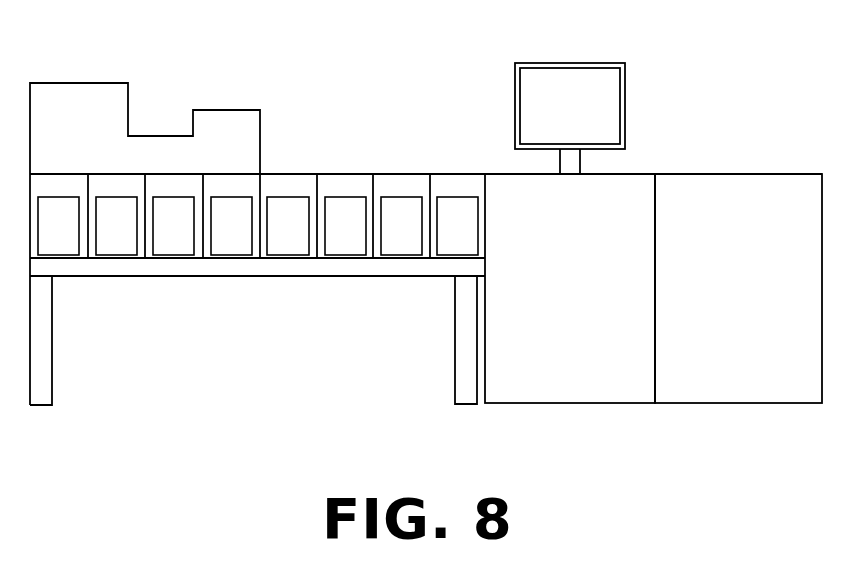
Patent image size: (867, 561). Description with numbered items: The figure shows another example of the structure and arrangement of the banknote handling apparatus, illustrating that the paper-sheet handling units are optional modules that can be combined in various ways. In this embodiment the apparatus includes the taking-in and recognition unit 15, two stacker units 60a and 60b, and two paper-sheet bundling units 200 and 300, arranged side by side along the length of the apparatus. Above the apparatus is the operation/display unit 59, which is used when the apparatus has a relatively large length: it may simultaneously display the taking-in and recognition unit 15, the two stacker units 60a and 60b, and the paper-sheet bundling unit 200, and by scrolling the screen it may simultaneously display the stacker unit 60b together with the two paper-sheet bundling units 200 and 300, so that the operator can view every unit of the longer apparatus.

The taking-in and recognition unit 15 is at (77, 82).
The operation/display unit 59 is at (565, 62).
The stacker unit 60a is at (135, 259).
The stacker unit 60b is at (357, 259).
The paper-sheet bundling unit 200 is at (569, 403).
The paper-sheet bundling unit 300 is at (737, 403).